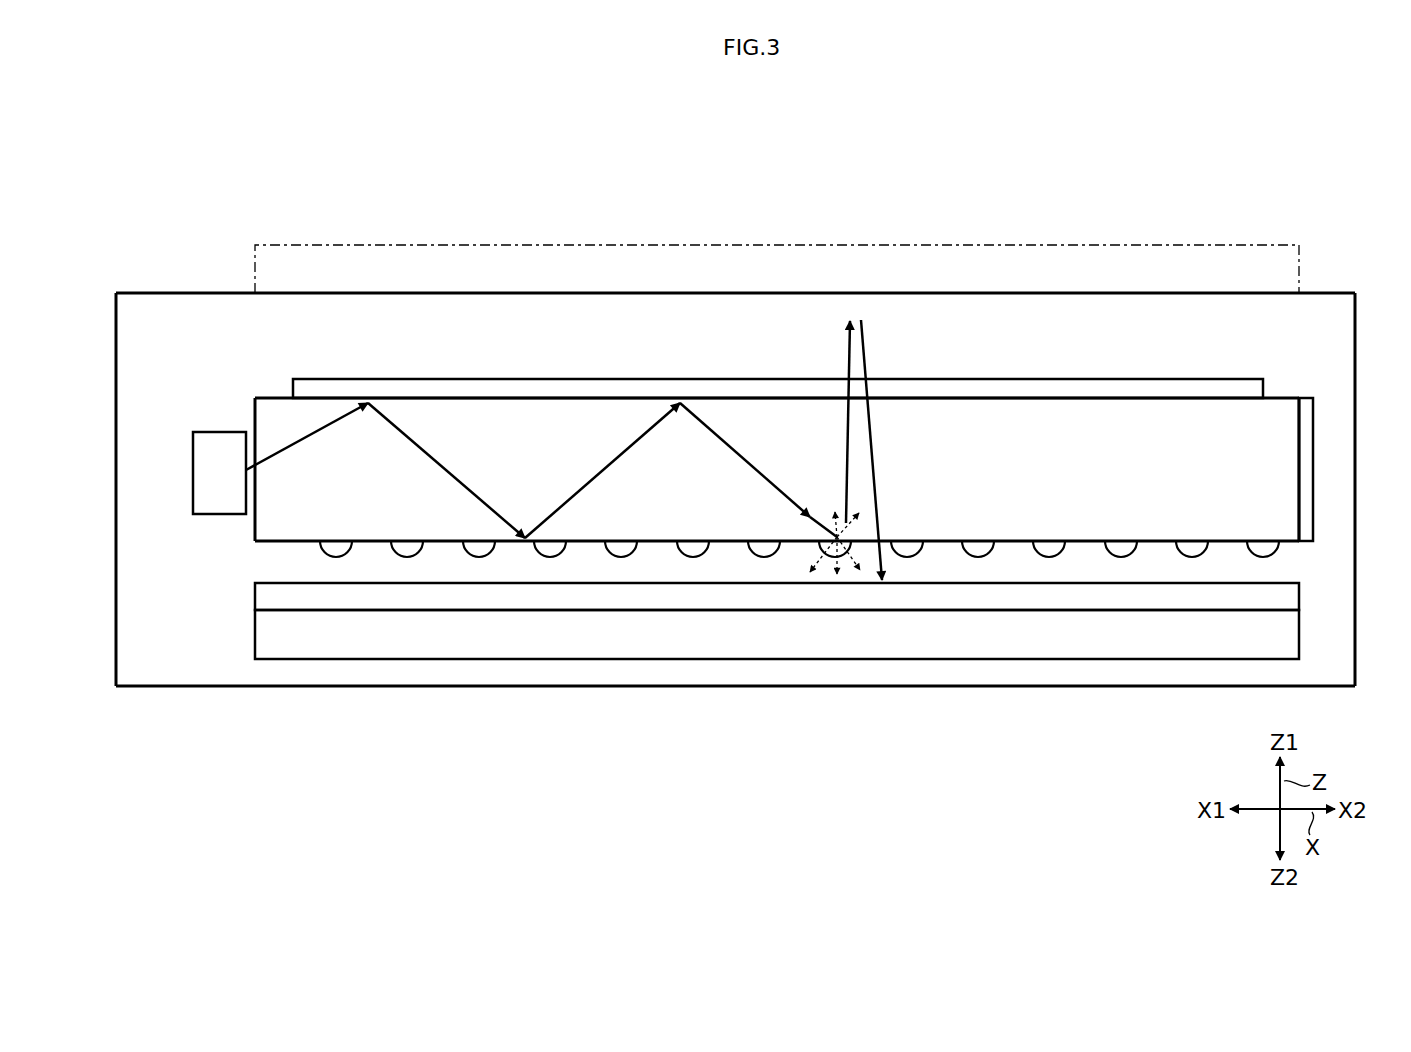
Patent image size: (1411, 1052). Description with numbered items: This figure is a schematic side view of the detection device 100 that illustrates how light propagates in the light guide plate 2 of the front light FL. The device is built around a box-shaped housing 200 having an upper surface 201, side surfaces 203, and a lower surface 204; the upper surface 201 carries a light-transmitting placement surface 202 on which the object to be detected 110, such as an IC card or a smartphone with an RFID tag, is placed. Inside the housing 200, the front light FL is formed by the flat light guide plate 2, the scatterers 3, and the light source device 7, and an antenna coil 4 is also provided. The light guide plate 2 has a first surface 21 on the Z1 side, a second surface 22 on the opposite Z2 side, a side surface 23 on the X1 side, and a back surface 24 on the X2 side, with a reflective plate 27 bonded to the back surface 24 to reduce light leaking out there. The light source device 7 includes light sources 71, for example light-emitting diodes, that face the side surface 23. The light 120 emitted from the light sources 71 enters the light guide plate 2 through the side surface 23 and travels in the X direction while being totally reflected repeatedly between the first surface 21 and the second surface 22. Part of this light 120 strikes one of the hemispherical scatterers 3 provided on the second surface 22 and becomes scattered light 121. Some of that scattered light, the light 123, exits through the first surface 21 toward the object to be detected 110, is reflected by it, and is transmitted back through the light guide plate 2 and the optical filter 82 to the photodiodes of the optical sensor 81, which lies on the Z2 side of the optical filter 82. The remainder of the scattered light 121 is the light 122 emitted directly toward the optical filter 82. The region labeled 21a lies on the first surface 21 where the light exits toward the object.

The detection device 100 is at (1070, 163).
The object to be detected 110 is at (1283, 266).
The housing 200 is at (113, 554).
The upper surface 201 is at (218, 293).
The placement surface 202 is at (735, 241).
The side surfaces 203 is at (116, 442).
The lower surface 204 is at (237, 687).
The light guide plate 2 is at (312, 420).
The light 120 is at (430, 450).
The first surface 21 is at (1178, 392).
The light exit surface portion 21a is at (1018, 398).
The second surface 22 is at (945, 545).
The side surface 23 is at (253, 412).
The back surface 24 is at (1300, 455).
The reflective plate 27 is at (1306, 490).
The scatterers 3 is at (825, 551).
The antenna coil 4 is at (1228, 379).
The light source device 7 is at (157, 473).
The light sources 71 is at (207, 472).
The optical sensor 81 is at (1285, 636).
The optical filter 82 is at (1285, 598).
The front light FL is at (248, 392).
The scattered light 121 is at (833, 523).
The light 122 is at (825, 553).
The light 123 is at (866, 368).